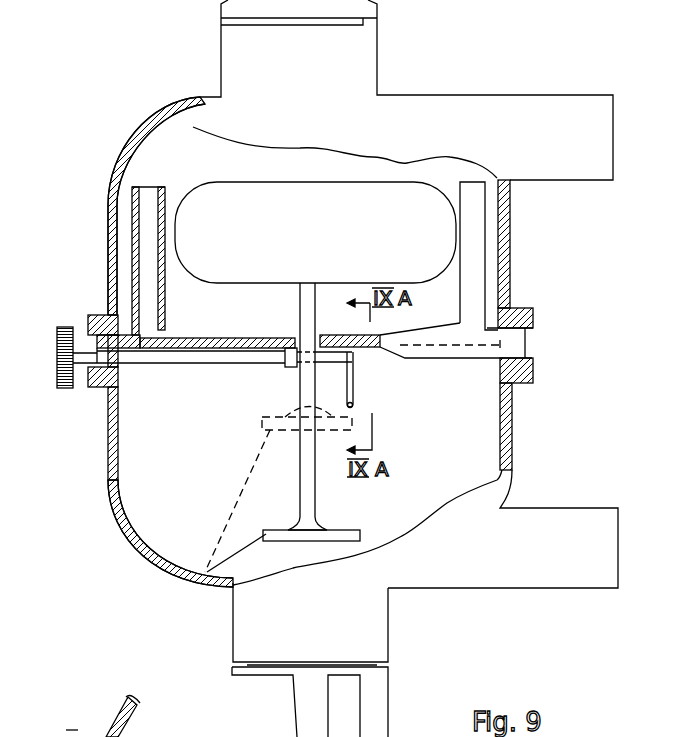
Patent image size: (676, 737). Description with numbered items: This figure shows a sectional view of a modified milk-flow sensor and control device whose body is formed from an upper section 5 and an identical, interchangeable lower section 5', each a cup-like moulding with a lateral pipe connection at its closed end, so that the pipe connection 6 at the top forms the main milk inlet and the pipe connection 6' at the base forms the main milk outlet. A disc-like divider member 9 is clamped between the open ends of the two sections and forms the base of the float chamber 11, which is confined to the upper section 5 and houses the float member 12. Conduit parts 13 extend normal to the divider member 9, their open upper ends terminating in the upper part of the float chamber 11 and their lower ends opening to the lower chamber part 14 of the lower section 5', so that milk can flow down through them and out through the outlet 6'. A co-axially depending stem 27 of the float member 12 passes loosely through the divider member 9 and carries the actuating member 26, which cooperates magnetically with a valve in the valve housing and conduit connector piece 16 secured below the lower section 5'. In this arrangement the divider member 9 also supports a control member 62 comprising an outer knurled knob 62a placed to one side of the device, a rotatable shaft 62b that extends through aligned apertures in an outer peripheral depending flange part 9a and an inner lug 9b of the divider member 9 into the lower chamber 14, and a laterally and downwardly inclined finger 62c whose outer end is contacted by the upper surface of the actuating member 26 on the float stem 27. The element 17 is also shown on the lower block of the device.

The upper section 5 is at (148, 232).
The lower section 5' is at (170, 533).
The pipe connection 6 is at (406, 90).
The pipe connection 6' is at (425, 511).
The divider member 9 is at (245, 337).
The outer peripheral depending flange part 9a is at (110, 390).
The inner lug 9b is at (286, 368).
The float chamber 11 is at (208, 162).
The float member 12 is at (357, 215).
The conduit parts 13 is at (137, 262).
The lower chamber part 14 is at (150, 502).
The valve housing and conduit connector piece 16 is at (291, 674).
The lower block 17 is at (373, 642).
The actuating member 26 is at (207, 572).
The stem 27 is at (311, 486).
The control member 62 is at (73, 394).
The outer knurled knob 62a is at (58, 357).
The rotatable shaft 62b is at (217, 355).
The finger 62c is at (355, 388).